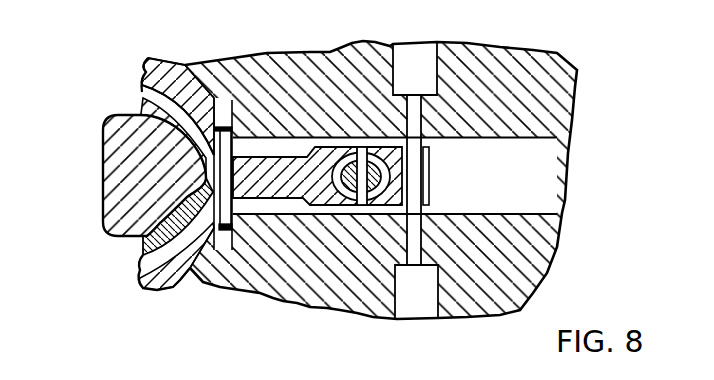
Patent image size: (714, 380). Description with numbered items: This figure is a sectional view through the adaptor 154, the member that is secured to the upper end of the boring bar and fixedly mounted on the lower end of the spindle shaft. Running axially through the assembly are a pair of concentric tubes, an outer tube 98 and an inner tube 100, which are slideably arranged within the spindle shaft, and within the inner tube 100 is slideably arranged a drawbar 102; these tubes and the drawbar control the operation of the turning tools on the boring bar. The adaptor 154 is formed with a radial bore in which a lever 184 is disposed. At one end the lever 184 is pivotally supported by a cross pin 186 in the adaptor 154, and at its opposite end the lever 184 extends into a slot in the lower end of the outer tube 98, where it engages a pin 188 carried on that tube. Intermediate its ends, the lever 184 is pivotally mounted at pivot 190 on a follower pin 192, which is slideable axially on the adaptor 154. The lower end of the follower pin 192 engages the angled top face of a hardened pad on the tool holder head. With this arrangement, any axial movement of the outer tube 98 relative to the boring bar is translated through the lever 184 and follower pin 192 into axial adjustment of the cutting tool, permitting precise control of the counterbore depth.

The outer tube 98 is at (157, 280).
The inner tube 100 is at (143, 243).
The drawbar 102 is at (105, 177).
The adaptor 154 is at (560, 68).
The lever 184 is at (273, 205).
The cross pin 186 is at (428, 208).
The pin 188 is at (240, 153).
The pivot 190 is at (363, 146).
The follower pin 192 is at (348, 183).